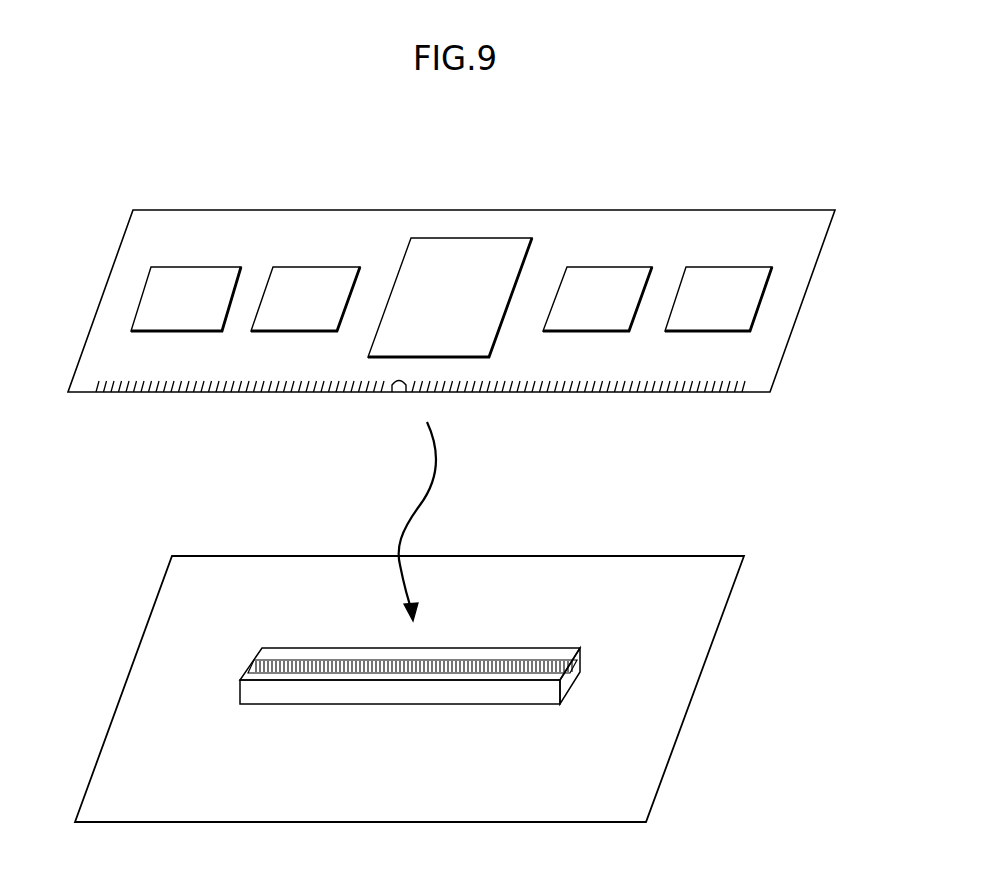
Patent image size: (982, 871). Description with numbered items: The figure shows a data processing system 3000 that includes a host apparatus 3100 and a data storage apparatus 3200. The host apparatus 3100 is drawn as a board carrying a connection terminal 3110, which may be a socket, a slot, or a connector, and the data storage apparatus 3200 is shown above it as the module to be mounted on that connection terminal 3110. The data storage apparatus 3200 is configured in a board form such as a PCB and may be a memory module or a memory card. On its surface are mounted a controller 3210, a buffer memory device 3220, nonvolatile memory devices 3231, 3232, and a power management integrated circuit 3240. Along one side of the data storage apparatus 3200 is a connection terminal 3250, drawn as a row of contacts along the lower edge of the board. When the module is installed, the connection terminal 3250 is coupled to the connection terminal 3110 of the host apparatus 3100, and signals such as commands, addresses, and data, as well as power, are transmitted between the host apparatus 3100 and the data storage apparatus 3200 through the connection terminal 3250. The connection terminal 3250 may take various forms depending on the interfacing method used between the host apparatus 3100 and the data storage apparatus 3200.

The data processing system 3000 is at (107, 167).
The data storage apparatus 3200 is at (451, 301).
The controller 3210 is at (450, 297).
The buffer memory device 3220 is at (305, 299).
The nonvolatile memory device 3231 is at (597, 299).
The nonvolatile memory device 3232 is at (718, 299).
The power management integrated circuit 3240 is at (186, 299).
The connection terminal 3250 is at (113, 392).
The host apparatus 3100 is at (409, 689).
The connection terminal 3110 is at (580, 664).